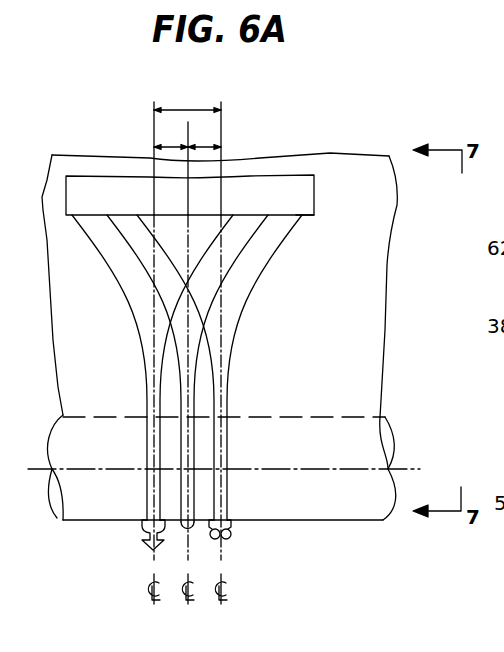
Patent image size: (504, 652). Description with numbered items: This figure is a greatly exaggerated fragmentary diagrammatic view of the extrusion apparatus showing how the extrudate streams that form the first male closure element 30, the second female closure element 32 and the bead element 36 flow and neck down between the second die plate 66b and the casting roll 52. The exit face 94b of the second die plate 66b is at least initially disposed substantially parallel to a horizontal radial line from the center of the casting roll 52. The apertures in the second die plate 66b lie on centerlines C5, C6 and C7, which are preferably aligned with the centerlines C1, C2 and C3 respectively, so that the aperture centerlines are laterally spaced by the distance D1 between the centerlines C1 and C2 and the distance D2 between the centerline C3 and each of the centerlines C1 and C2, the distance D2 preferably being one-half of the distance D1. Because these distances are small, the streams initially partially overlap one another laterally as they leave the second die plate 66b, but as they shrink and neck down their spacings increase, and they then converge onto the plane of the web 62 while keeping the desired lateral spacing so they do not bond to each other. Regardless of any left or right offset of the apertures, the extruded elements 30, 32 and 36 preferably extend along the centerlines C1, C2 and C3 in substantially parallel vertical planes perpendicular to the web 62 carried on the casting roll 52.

The first male closure element 30 is at (143, 356).
The second female closure element 32 is at (233, 343).
The bead element 36 is at (196, 377).
The casting roll 52 is at (45, 527).
The web 62 is at (373, 268).
The second die plate 66b is at (287, 174).
The exit face 94b is at (305, 217).
The centerline C1 is at (150, 586).
The second centerline C2 is at (220, 570).
The centerline C3 is at (192, 592).
The centerline C5 is at (154, 116).
The centerline C6 is at (222, 118).
The centerline C7 is at (187, 132).
The distance D1 is at (191, 108).
The distance D2 is at (168, 146).